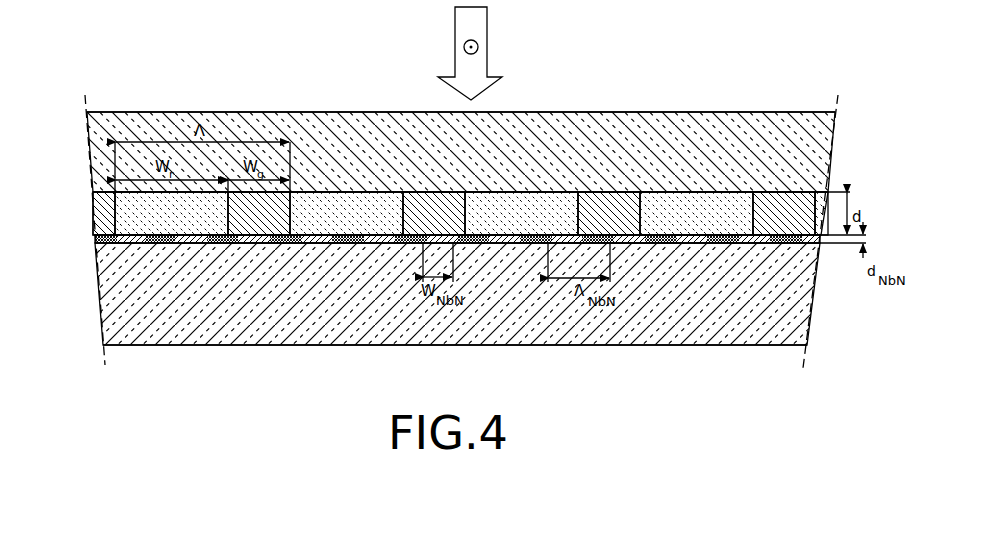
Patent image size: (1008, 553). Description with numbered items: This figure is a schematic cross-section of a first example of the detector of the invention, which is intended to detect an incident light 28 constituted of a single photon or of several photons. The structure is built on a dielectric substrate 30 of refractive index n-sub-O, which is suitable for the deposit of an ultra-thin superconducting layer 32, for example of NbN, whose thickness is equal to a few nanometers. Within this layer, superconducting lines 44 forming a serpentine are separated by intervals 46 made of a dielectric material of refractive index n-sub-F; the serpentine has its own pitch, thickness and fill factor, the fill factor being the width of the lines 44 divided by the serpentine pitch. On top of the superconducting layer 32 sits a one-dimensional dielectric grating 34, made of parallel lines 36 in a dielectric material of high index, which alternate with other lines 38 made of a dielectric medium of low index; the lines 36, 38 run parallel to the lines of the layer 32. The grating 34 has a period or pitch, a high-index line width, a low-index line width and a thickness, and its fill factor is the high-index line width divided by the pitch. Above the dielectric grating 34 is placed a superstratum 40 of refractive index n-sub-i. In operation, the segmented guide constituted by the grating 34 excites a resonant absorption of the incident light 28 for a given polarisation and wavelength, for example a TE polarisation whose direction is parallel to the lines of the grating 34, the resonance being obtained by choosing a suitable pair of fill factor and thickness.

The incident light 28 is at (455, 12).
The dielectric substrate 30 is at (104, 292).
The ultra-thin superconducting layer 32 is at (443, 229).
The one-dimensional dielectric grating 34 is at (352, 189).
The parallel lines 36 is at (688, 205).
The other lines 38 is at (623, 226).
The superstratum 40 is at (93, 146).
The superconducting lines 44 is at (318, 243).
The intervals 46 is at (413, 243).